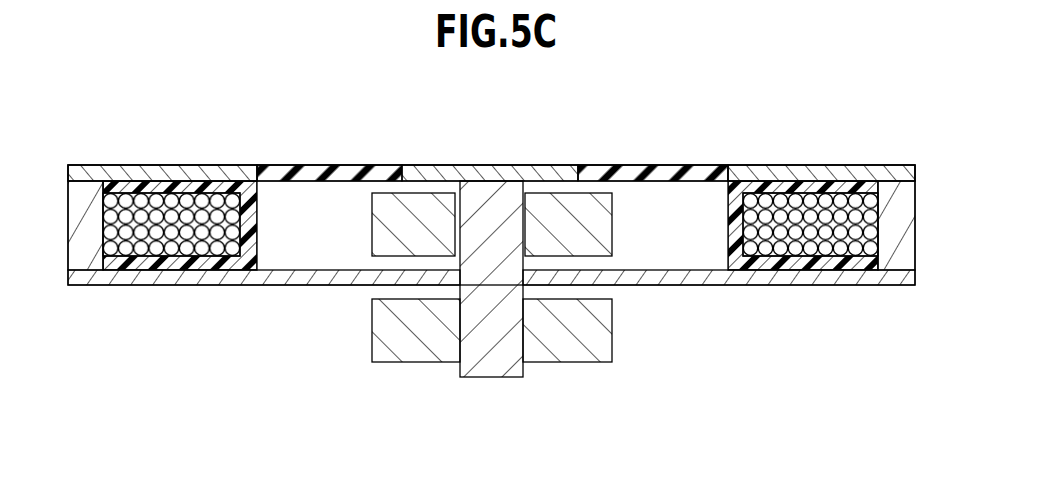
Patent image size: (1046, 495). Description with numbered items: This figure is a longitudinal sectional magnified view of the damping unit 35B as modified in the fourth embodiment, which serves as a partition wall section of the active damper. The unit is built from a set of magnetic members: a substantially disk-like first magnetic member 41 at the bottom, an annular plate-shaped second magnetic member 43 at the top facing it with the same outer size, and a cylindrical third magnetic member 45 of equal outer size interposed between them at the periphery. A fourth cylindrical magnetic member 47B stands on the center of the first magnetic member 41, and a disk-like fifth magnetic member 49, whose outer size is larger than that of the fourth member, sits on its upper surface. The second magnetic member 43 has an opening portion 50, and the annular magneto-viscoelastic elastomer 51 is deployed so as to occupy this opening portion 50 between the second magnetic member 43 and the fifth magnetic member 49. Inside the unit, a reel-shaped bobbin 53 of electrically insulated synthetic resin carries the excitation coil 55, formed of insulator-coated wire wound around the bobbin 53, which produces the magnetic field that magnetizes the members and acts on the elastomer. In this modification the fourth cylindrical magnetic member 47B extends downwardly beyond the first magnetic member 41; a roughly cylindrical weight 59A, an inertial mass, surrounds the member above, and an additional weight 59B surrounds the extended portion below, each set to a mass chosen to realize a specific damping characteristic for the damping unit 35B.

The damping unit 35B is at (832, 141).
The first magnetic member 41 is at (653, 282).
The second magnetic member 43 is at (794, 172).
The third magnetic member 45 is at (908, 220).
The fourth cylindrical magnetic member 47B is at (477, 362).
The fifth magnetic member 49 is at (509, 168).
The opening portion 50 is at (597, 172).
The magneto-viscoelastic elastomer 51 is at (682, 172).
The bobbin 53 is at (845, 262).
The excitation coil 55 is at (780, 237).
The weight 59A is at (410, 224).
The additional weight 59B is at (402, 332).